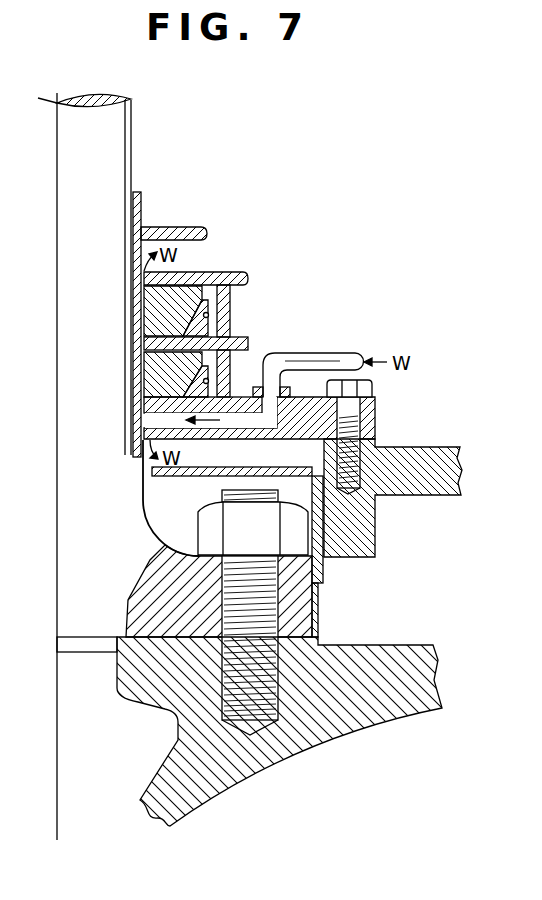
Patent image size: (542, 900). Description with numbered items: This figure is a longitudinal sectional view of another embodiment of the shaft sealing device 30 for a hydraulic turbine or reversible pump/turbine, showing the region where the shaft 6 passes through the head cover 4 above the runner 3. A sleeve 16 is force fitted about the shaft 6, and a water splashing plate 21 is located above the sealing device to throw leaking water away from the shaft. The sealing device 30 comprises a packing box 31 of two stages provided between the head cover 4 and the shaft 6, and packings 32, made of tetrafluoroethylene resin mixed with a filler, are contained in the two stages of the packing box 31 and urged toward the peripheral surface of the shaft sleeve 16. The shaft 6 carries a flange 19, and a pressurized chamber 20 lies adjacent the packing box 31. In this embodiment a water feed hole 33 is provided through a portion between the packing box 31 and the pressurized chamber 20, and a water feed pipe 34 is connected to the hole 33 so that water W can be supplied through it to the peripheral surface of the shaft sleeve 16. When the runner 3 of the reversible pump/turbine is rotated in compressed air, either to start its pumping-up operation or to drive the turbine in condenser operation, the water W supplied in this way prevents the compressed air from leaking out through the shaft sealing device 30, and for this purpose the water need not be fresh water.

The runner 3 is at (410, 660).
The head cover 4 is at (415, 460).
The shaft 6 is at (113, 113).
The sleeve 16 is at (137, 449).
The flange 19 is at (312, 611).
The pressurized chamber 20 is at (223, 460).
The water splashing plate 21 is at (141, 215).
The shaft sealing device 30 is at (227, 334).
The packing box 31 is at (249, 340).
The packing 32 is at (150, 313).
The water feed hole 33 is at (160, 421).
The water feed pipe 34 is at (332, 352).